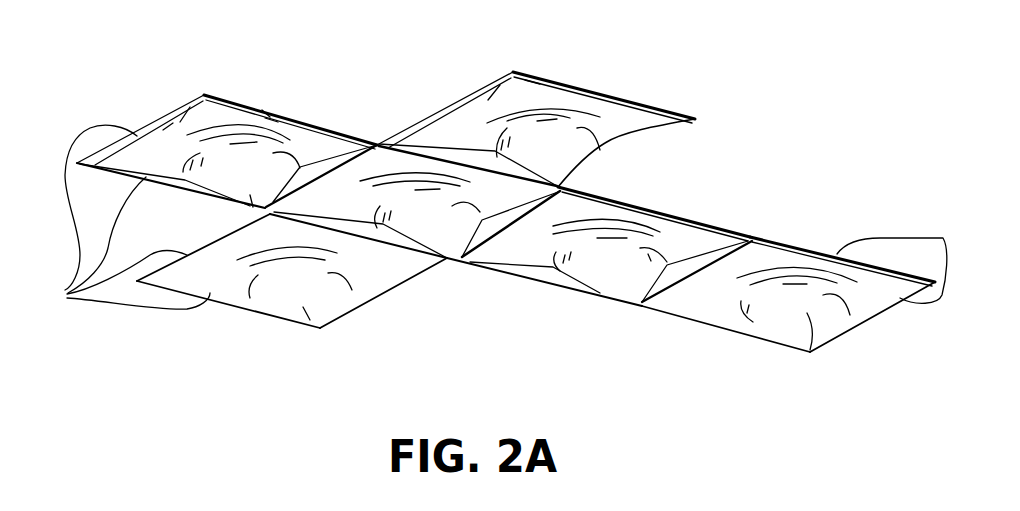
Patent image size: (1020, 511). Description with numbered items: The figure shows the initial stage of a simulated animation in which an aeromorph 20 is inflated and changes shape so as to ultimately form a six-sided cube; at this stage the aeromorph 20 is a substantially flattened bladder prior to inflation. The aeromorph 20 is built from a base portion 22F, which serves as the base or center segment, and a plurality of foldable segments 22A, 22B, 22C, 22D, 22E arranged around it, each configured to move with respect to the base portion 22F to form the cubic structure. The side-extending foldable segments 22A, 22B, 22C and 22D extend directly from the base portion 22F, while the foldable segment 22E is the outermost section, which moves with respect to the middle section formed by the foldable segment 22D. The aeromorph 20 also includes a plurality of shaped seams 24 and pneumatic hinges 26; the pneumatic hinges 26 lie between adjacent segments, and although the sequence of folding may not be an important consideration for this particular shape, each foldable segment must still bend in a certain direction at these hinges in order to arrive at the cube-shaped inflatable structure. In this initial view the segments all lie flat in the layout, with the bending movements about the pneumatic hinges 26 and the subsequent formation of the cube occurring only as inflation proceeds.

The aeromorph 20 is at (757, 71).
The foldable segment 22A is at (512, 72).
The foldable segment 22B is at (207, 96).
The foldable segment 22C is at (277, 280).
The foldable segment 22D is at (590, 262).
The foldable segment 22E is at (813, 351).
The base portion 22F is at (432, 208).
The shaped seam 24 is at (740, 327).
The pneumatic hinge 26 is at (460, 162).